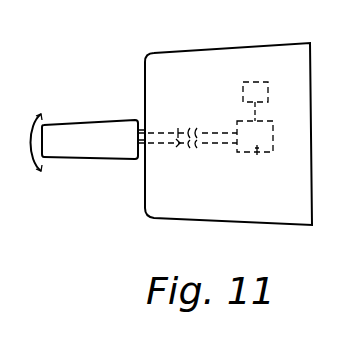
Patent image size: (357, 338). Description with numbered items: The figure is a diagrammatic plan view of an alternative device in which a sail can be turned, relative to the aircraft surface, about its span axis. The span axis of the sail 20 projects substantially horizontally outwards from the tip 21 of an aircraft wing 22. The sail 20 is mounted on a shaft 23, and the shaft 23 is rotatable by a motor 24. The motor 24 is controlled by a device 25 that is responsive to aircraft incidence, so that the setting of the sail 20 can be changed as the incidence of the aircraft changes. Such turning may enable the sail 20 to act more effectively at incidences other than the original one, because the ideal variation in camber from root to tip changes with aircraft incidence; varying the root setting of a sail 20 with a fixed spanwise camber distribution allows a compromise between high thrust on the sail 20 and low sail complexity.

The sail 20 is at (98, 122).
The tip 21 is at (140, 170).
The aircraft wing 22 is at (251, 28).
The shaft 23 is at (173, 147).
The motor 24 is at (257, 155).
The device 25 is at (243, 88).